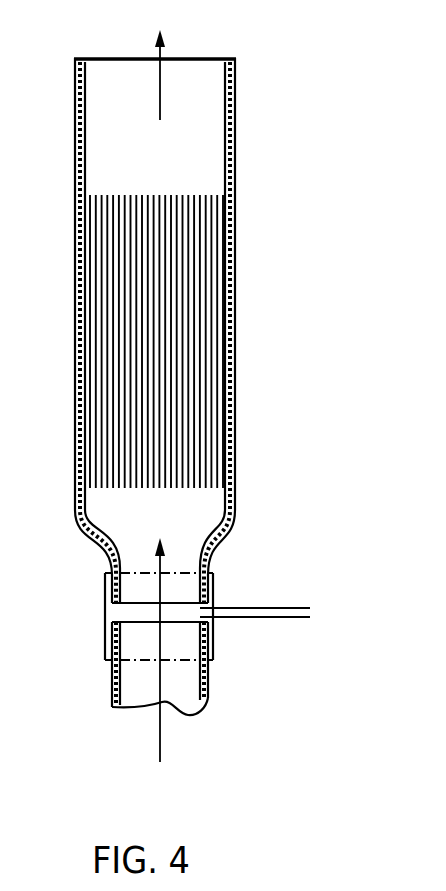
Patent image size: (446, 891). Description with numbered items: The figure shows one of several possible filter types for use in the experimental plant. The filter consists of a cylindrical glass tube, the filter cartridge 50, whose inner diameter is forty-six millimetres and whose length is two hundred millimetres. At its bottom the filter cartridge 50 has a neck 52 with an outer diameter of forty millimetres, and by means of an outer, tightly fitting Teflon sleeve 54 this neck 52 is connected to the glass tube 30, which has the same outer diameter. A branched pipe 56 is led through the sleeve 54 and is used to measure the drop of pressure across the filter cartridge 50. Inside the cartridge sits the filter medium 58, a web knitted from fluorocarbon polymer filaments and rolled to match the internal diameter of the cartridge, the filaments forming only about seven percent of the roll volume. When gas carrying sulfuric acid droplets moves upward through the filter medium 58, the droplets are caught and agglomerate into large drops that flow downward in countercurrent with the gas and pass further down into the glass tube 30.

The filter cartridge 50 is at (235, 168).
The filter medium 58 is at (195, 363).
The neck 52 is at (208, 562).
The Teflon sleeve 54 is at (105, 578).
The branched pipe 56 is at (278, 613).
The glass tube 30 is at (208, 690).